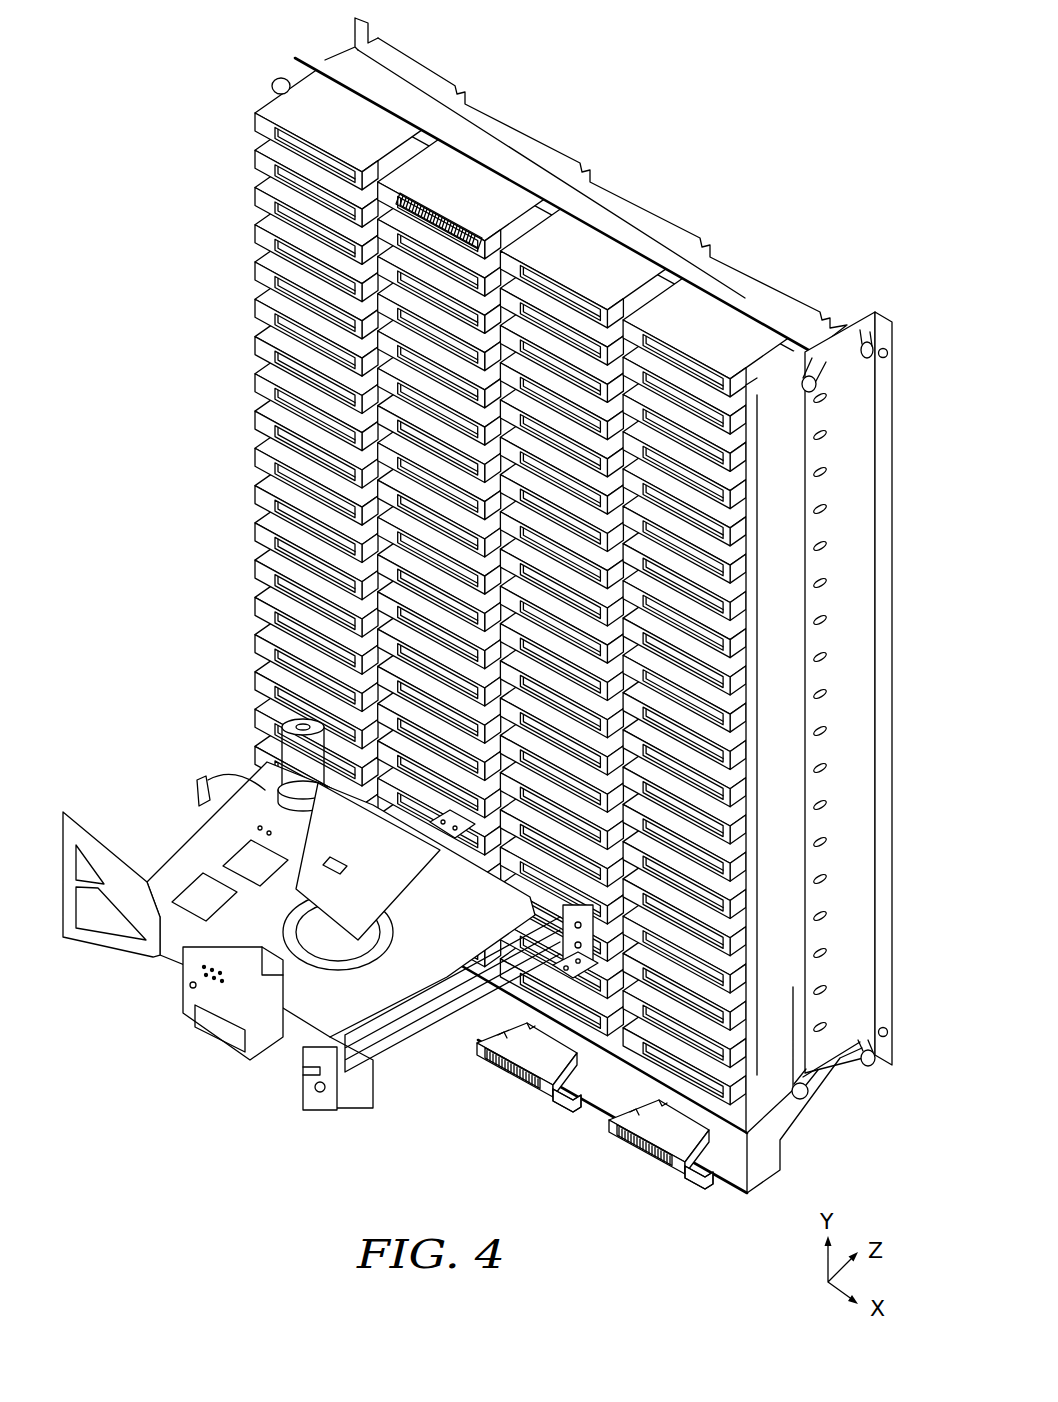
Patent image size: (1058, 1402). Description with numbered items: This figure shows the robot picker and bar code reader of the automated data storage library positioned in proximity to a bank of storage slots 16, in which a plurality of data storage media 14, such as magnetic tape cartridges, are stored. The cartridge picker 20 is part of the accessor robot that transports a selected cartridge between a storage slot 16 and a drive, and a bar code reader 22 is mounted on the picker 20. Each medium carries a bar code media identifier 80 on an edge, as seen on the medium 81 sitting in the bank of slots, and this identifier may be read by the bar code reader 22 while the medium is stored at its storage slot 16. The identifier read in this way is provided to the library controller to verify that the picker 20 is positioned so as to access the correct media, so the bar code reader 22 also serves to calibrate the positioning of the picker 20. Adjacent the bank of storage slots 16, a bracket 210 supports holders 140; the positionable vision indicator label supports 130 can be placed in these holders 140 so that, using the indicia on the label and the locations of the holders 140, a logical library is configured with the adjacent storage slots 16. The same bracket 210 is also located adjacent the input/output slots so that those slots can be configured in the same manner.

The data storage media 14 is at (218, 164).
The storage slots 16 is at (855, 427).
The cartridge picker 20 is at (358, 1003).
The bar code reader 22 is at (262, 828).
The bar code media identifier 80 is at (441, 214).
The medium 81 is at (527, 147).
The positionable vision indicator label supports 130 is at (514, 1094).
The holders 140 is at (568, 1102).
The bracket 210 is at (810, 1130).